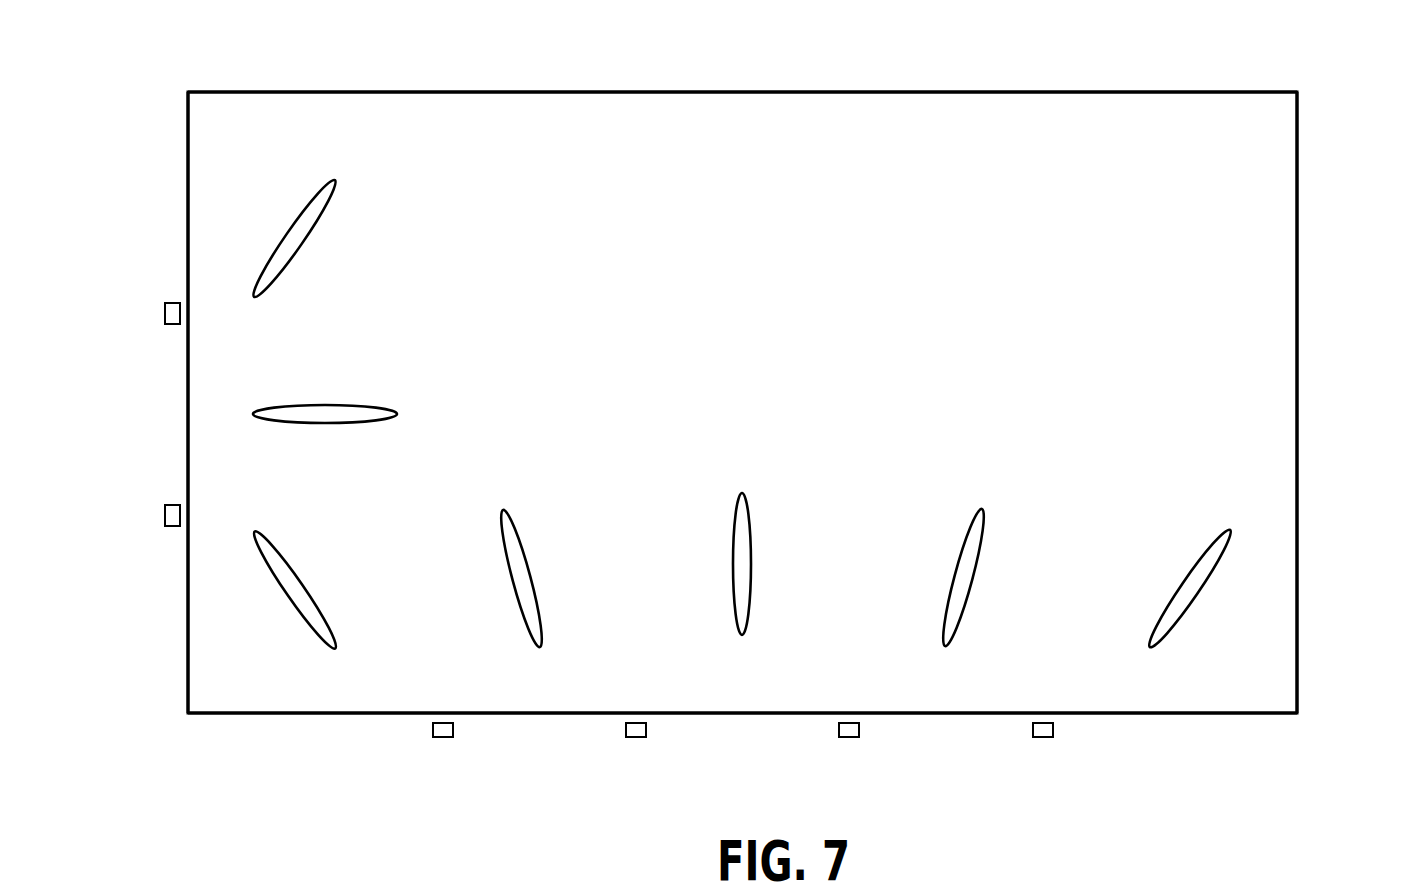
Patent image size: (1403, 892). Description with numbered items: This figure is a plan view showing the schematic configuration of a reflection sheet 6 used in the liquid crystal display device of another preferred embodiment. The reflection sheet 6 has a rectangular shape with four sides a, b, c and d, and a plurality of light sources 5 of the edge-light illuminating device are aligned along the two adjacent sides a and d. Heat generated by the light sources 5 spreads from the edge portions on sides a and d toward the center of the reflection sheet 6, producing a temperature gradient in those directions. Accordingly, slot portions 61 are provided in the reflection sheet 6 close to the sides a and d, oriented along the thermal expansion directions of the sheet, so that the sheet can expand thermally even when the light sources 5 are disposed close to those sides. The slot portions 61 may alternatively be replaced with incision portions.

The slot portion 61 is at (303, 248).
The light source 5 is at (165, 311).
The reflection sheet 6 is at (1299, 216).
The side a is at (1205, 714).
The side b is at (1092, 92).
The side c is at (1299, 562).
The side d is at (187, 216).